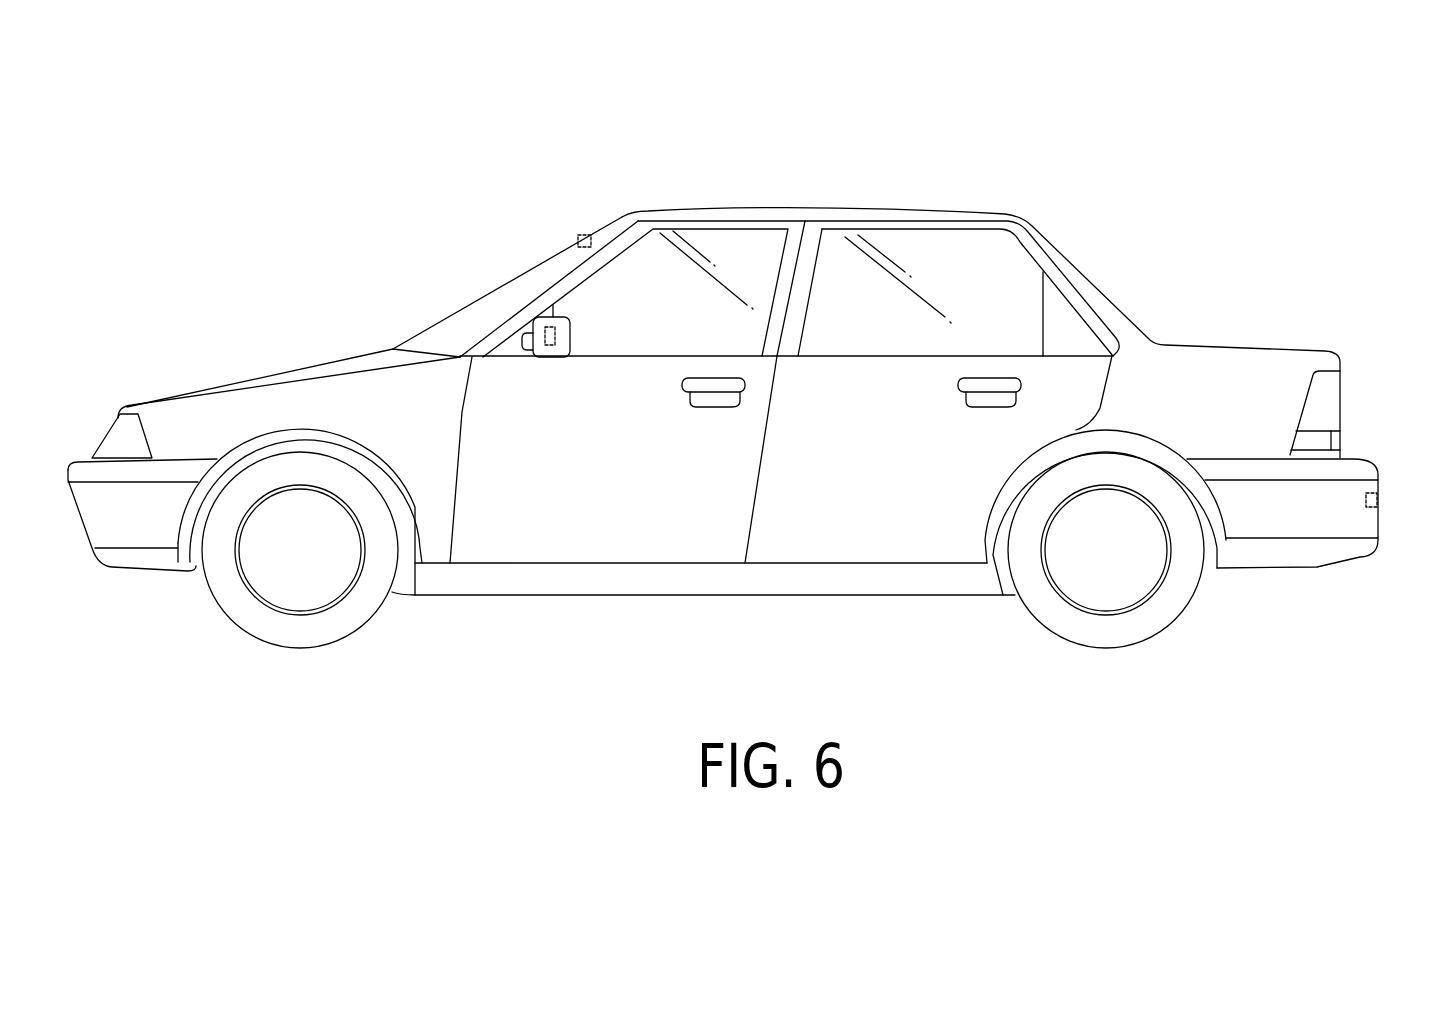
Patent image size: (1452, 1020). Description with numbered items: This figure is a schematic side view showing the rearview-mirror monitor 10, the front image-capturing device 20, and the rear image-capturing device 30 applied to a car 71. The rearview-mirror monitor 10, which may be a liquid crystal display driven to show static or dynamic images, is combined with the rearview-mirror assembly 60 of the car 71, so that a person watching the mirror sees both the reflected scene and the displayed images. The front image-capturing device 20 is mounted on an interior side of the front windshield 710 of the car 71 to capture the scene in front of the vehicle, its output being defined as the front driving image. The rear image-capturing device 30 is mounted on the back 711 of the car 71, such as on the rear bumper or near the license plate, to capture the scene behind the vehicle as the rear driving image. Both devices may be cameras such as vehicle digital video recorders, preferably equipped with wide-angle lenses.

The car 71 is at (865, 170).
The front windshield 710 is at (525, 278).
The back 711 is at (1297, 513).
The rearview-mirror assembly 60 is at (582, 314).
The rearview-mirror monitor 10 is at (557, 341).
The front image-capturing device 20 is at (587, 238).
The rear image-capturing device 30 is at (1379, 500).